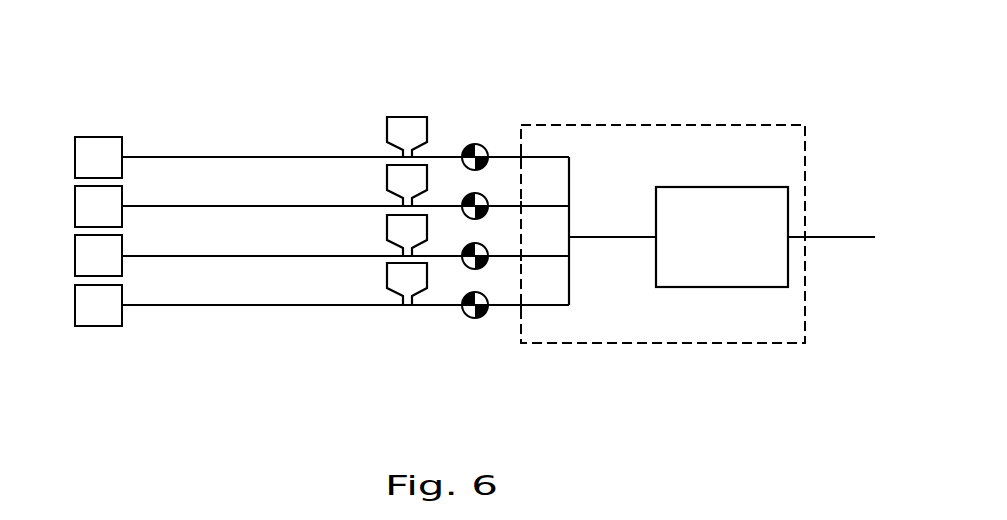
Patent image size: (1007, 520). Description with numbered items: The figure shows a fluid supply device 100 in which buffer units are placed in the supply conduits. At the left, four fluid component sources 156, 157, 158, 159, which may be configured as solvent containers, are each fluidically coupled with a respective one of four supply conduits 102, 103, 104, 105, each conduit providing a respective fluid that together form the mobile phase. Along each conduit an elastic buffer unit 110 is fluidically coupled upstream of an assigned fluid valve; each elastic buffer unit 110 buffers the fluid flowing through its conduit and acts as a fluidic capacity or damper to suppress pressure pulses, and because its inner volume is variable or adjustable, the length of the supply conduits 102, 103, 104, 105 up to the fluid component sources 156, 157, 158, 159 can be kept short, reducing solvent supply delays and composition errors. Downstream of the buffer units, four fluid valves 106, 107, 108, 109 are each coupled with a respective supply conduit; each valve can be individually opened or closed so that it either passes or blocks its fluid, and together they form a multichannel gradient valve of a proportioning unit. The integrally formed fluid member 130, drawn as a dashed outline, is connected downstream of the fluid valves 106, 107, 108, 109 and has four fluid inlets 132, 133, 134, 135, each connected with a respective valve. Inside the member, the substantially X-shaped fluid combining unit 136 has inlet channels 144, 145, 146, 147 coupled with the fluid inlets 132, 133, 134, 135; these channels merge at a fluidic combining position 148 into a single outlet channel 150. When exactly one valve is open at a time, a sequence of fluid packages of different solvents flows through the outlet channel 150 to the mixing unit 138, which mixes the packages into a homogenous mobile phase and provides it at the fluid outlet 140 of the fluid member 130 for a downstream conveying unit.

The fluid supply device 100 is at (112, 58).
The supply conduit 102 is at (188, 157).
The supply conduit 103 is at (207, 206).
The supply conduit 104 is at (195, 256).
The supply conduit 105 is at (175, 308).
The fluid valve 106 is at (475, 145).
The fluid valve 107 is at (486, 195).
The fluid valve 108 is at (464, 268).
The fluid valve 109 is at (476, 318).
The elastic buffer unit 110 is at (387, 181).
The integrally formed fluid member 130 is at (760, 125).
The fluid inlet 132 is at (522, 157).
The fluid inlet 133 is at (522, 206).
The fluid inlet 134 is at (522, 256).
The fluid inlet 135 is at (537, 293).
The fluid combining unit 136 is at (590, 350).
The mixing unit 138 is at (722, 237).
The fluid outlet 140 is at (807, 237).
The inlet channel 144 is at (562, 157).
The inlet channel 145 is at (548, 206).
The inlet channel 146 is at (540, 257).
The inlet channel 147 is at (557, 307).
The fluidic combining position 148 is at (572, 236).
The outlet channel 150 is at (603, 237).
The fluid component source 156 is at (98, 157).
The fluid component source 157 is at (98, 206).
The fluid component source 158 is at (98, 255).
The fluid component source 159 is at (98, 305).